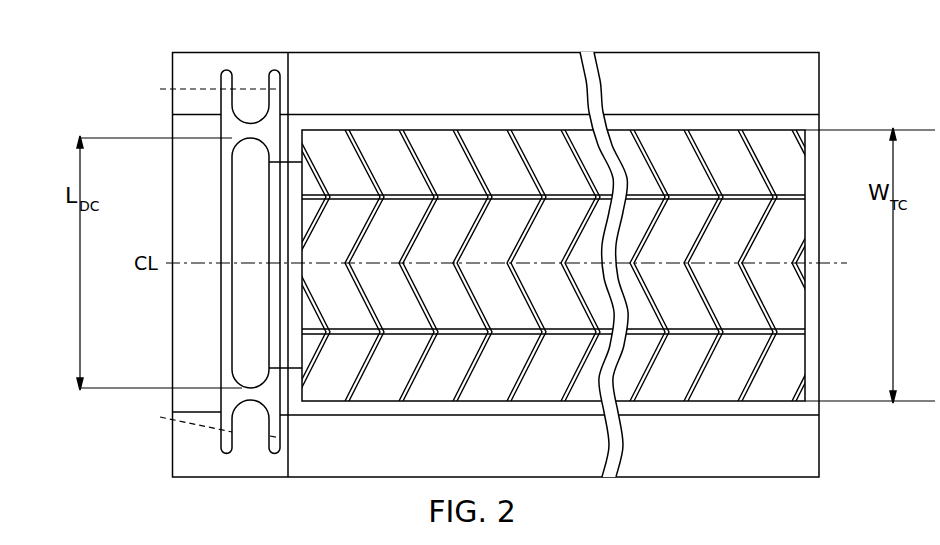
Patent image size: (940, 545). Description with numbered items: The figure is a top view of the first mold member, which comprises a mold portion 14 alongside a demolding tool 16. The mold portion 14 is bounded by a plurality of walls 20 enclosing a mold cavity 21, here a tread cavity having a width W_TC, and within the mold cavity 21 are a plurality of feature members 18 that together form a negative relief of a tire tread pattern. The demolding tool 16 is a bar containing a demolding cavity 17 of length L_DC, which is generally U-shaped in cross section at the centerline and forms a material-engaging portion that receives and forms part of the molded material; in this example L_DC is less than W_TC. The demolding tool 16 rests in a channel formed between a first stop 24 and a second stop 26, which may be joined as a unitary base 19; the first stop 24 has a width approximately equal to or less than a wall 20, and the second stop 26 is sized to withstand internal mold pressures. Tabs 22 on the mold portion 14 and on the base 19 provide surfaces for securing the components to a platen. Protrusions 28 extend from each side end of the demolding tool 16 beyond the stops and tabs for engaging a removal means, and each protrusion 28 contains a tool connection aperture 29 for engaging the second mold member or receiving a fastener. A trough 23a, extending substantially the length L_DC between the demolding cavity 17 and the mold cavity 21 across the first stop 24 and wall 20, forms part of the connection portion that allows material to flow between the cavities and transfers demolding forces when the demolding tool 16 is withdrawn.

The mold portion 14 is at (526, 109).
The demolding tool 16 is at (246, 125).
The demolding cavity 17 is at (243, 166).
The feature members 18 is at (676, 155).
The base 19 is at (172, 127).
The walls 20 is at (298, 143).
The mold cavity 21 is at (737, 293).
The tabs 22 is at (806, 74).
The trough 23a is at (293, 190).
The first stop 24 is at (286, 398).
The second stop 26 is at (190, 297).
The protrusions 28 is at (223, 74).
The tool connection apertures 29 is at (205, 258).